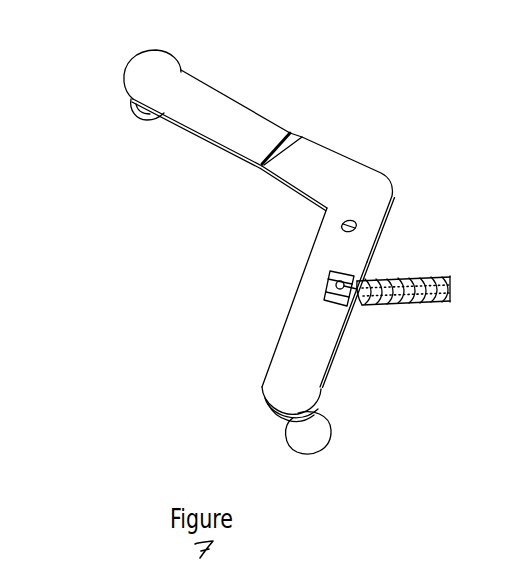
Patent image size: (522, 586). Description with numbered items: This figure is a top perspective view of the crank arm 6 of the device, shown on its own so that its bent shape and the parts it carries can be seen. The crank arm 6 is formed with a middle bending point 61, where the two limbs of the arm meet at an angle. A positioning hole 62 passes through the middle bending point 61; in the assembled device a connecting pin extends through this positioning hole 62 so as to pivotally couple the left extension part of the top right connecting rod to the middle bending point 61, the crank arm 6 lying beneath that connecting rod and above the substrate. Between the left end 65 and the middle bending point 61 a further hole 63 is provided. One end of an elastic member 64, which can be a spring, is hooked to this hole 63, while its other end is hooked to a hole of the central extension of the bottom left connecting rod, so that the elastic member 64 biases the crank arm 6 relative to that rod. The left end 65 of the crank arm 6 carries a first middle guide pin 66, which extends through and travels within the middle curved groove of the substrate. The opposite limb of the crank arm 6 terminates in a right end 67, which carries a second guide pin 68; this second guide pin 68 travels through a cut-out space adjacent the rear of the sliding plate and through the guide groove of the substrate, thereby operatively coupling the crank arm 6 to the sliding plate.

The crank arm 6 is at (161, 280).
The middle bending point 61 is at (366, 193).
The positioning hole 62 is at (347, 218).
The hole 63 is at (333, 277).
The elastic member 64 is at (417, 307).
The left end 65 is at (283, 393).
The first middle guide pin 66 is at (312, 443).
The right end 67 is at (144, 72).
The second guide pin 68 is at (138, 106).